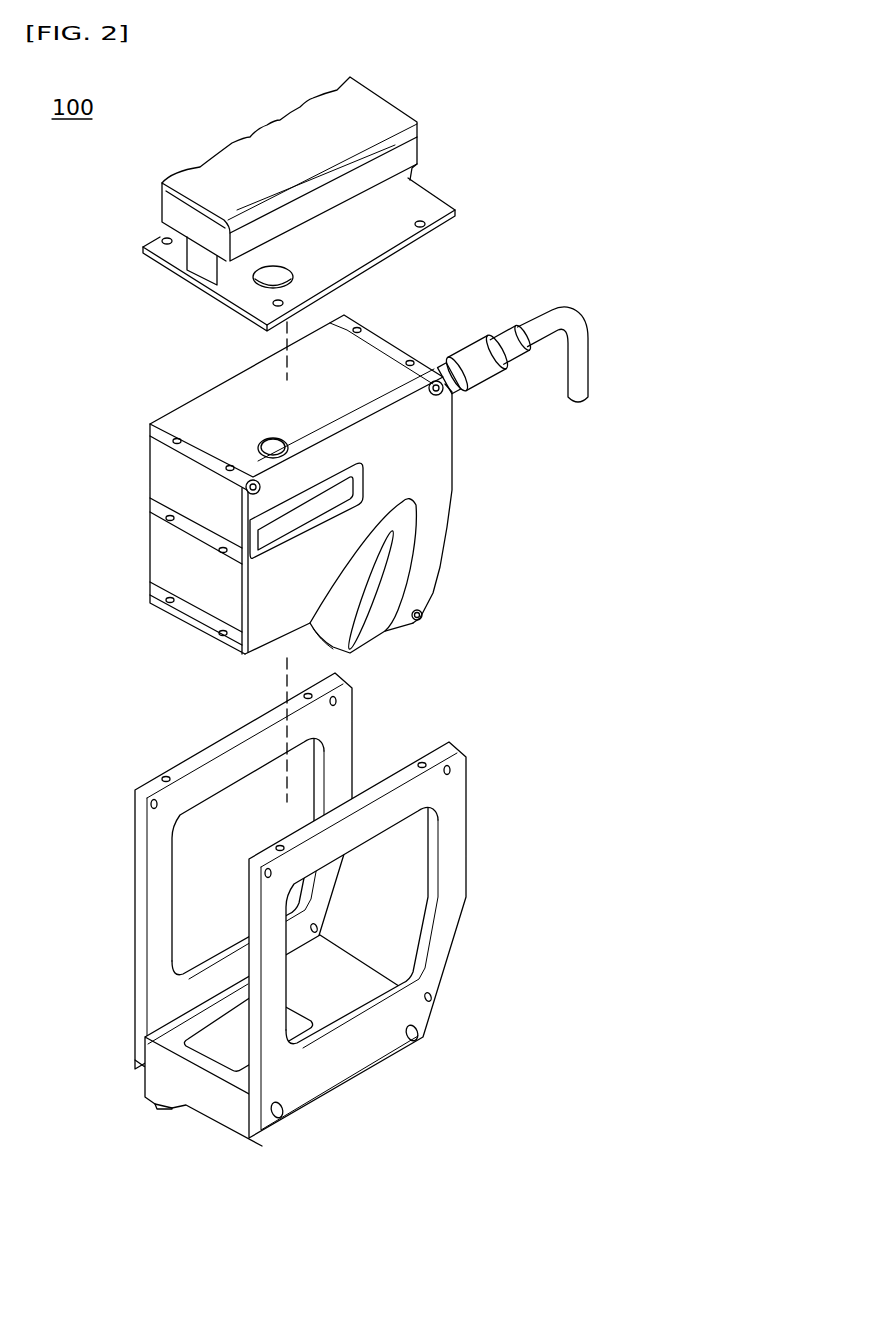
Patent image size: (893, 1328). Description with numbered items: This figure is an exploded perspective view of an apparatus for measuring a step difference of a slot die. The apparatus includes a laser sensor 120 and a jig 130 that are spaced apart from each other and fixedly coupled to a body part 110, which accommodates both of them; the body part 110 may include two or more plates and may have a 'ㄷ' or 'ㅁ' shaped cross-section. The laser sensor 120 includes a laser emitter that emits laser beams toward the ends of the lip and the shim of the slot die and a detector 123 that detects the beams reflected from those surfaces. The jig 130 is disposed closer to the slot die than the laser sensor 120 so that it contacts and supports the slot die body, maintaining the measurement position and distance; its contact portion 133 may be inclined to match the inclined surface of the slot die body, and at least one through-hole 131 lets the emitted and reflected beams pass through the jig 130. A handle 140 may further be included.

The body part 110 is at (455, 863).
The laser sensor 120 is at (369, 480).
The detector 123 is at (363, 582).
The jig 130 is at (225, 920).
The through-hole 131 is at (212, 1036).
The contact portion 133 is at (173, 1108).
The handle 140 is at (364, 107).